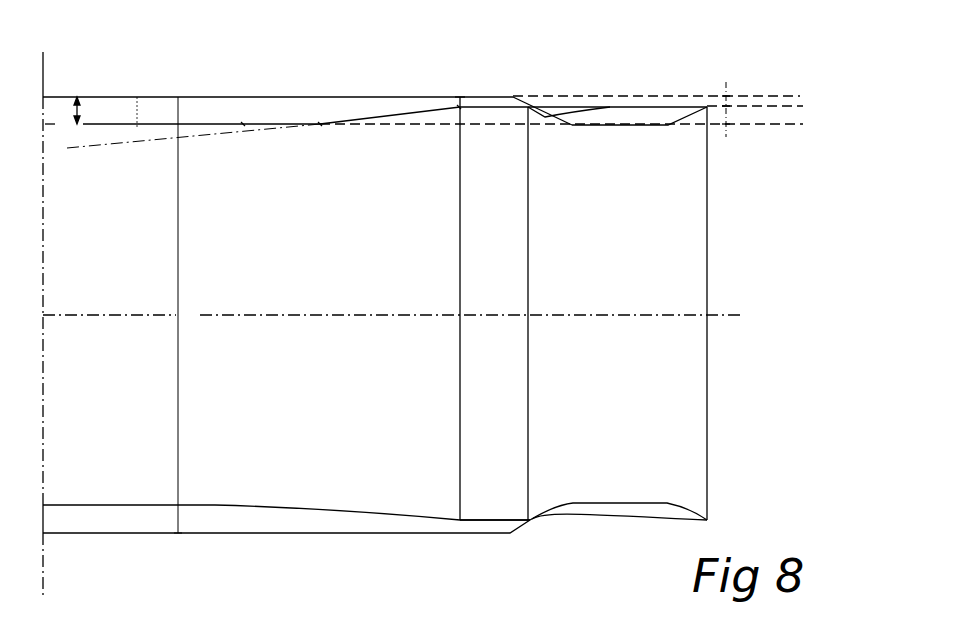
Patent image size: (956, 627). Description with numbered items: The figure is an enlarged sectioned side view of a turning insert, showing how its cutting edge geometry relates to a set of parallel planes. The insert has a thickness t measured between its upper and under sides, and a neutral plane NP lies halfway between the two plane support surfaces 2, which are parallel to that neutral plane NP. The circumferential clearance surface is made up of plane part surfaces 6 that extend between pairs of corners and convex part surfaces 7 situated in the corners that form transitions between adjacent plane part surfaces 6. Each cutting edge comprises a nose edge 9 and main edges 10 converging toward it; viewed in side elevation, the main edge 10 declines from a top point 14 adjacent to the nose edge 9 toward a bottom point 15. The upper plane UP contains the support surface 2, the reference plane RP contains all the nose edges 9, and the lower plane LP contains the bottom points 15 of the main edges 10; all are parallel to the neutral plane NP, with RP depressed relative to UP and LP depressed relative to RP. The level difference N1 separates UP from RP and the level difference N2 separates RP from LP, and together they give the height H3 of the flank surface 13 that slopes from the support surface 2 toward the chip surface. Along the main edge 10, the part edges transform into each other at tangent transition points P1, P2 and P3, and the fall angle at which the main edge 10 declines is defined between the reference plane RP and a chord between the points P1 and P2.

The support surface 2 is at (294, 96).
The plane part surface 6 is at (267, 253).
The convex part surface 7 is at (484, 253).
The nose edge 9 is at (485, 98).
The main edge 10 is at (372, 118).
The flank surface 13 is at (224, 123).
The top point 14 is at (460, 100).
The bottom point 15 is at (163, 122).
The height of the flank surface H3 is at (102, 111).
The transition point P1 is at (458, 106).
The transition point P2 is at (318, 123).
The transition point P3 is at (247, 124).
The upper plane UP is at (797, 95).
The reference plane RP is at (803, 106).
The lower plane LP is at (800, 123).
The neutral plane NP is at (740, 315).
The level difference N1 is at (728, 98).
The level difference N2 is at (728, 112).
The thickness t is at (188, 316).